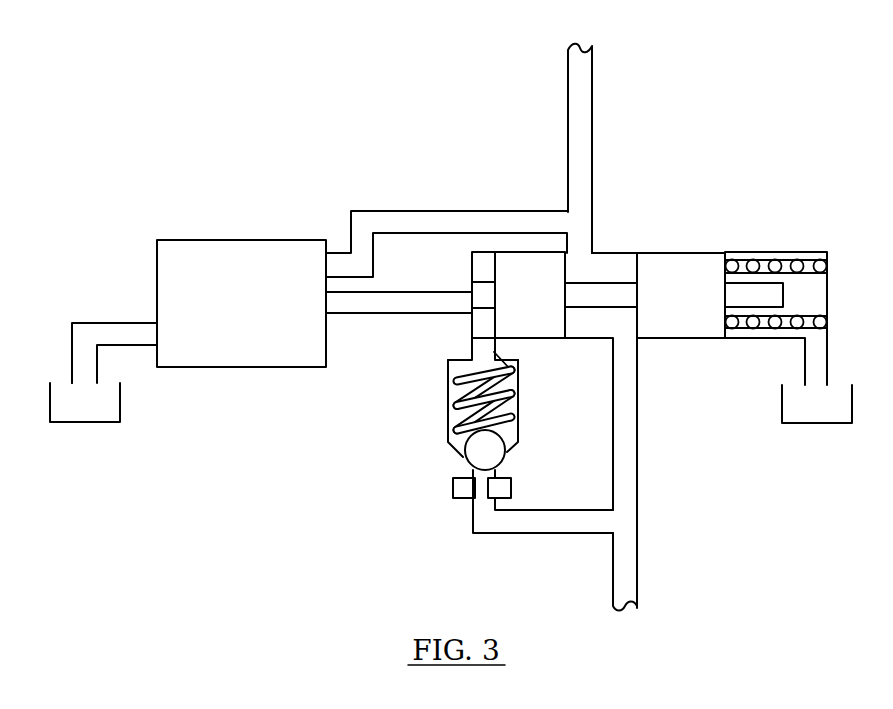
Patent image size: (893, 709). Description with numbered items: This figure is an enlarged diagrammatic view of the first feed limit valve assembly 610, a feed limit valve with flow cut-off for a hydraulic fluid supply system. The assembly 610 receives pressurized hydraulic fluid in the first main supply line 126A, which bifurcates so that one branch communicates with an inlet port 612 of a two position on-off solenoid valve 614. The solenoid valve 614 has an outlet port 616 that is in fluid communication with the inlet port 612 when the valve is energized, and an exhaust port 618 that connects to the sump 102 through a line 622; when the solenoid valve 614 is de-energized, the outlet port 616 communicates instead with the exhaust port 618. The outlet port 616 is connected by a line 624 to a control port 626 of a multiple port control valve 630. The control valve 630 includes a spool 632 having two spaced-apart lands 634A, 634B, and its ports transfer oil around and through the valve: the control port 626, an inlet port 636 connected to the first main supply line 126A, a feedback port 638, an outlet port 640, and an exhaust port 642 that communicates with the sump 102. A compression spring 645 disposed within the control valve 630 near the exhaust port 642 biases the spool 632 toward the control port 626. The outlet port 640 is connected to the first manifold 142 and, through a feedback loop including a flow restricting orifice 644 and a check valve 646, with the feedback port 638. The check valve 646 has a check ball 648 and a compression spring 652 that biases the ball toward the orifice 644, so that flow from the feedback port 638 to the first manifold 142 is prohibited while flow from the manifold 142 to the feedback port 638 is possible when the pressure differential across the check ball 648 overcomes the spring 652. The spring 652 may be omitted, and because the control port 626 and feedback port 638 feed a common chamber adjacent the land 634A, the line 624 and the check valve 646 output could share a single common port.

The sump 102 is at (85, 405).
The first main supply line 126A is at (592, 98).
The first manifold 142 is at (628, 585).
The first feed limit valve assembly 610 is at (352, 72).
The inlet port 612 is at (327, 262).
The solenoid valve 614 is at (245, 257).
The outlet port 616 is at (327, 303).
The exhaust port 618 is at (155, 332).
The line 622 is at (83, 340).
The line 624 is at (404, 303).
The control port 626 is at (472, 308).
The control valve 630 is at (762, 168).
The spool 632 is at (748, 292).
The land 634A is at (506, 309).
The land 634B is at (659, 309).
The inlet port 636 is at (580, 250).
The feedback port 638 is at (482, 338).
The outlet port 640 is at (627, 340).
The exhaust port 642 is at (817, 362).
The flow restricting orifice 644 is at (512, 490).
The compression spring 645 is at (772, 260).
The check valve 646 is at (458, 393).
The check ball 648 is at (495, 445).
The compression spring 652 is at (516, 384).